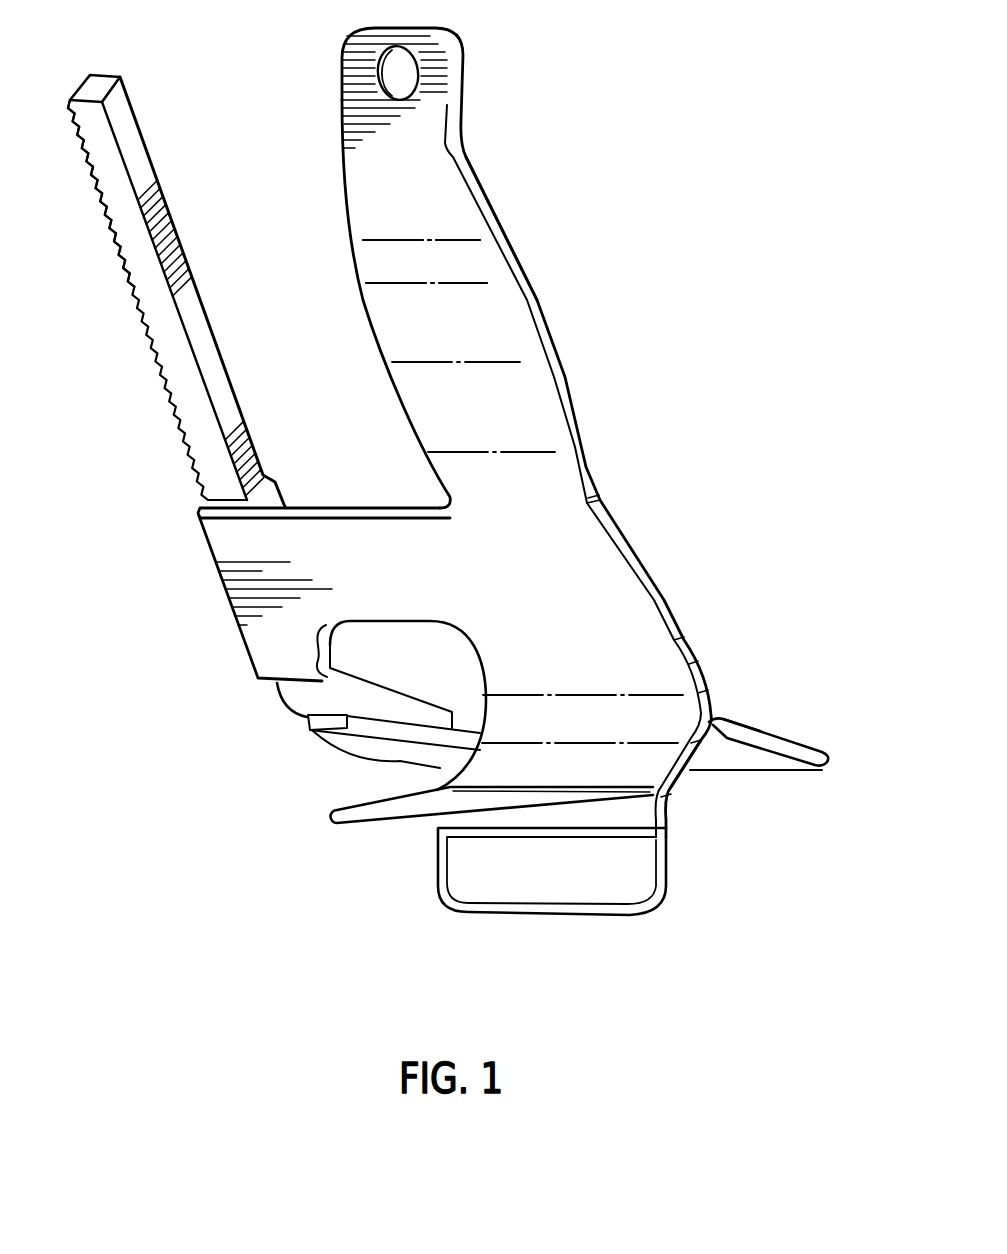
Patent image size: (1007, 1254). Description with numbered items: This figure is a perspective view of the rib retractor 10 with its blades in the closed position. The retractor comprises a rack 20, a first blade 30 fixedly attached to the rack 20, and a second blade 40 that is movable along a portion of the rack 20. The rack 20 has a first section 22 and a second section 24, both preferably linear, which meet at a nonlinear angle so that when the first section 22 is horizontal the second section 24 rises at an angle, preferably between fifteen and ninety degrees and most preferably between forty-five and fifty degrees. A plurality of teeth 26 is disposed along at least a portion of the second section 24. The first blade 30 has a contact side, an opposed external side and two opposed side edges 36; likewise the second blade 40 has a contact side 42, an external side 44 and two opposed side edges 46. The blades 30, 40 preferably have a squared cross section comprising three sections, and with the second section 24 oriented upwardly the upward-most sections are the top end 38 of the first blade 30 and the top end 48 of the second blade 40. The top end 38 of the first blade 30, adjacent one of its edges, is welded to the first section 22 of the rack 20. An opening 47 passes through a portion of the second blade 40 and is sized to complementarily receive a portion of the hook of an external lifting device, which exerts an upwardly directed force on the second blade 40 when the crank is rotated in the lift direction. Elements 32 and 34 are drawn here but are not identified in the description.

The rib retractor 10 is at (662, 176).
The rack 20 is at (148, 141).
The first section 22 is at (290, 707).
The second section 24 is at (163, 238).
The teeth 26 is at (132, 277).
The first blade 30 is at (785, 737).
The lower bend 32 is at (692, 790).
The pocket 34 is at (605, 880).
The side edges 36 is at (333, 743).
The top end 38 is at (745, 720).
The second blade 40 is at (572, 394).
The contact side 42 is at (432, 802).
The external side 44 is at (428, 830).
The side edges 46 is at (478, 652).
The opening 47 is at (410, 73).
The top end 48 is at (490, 262).